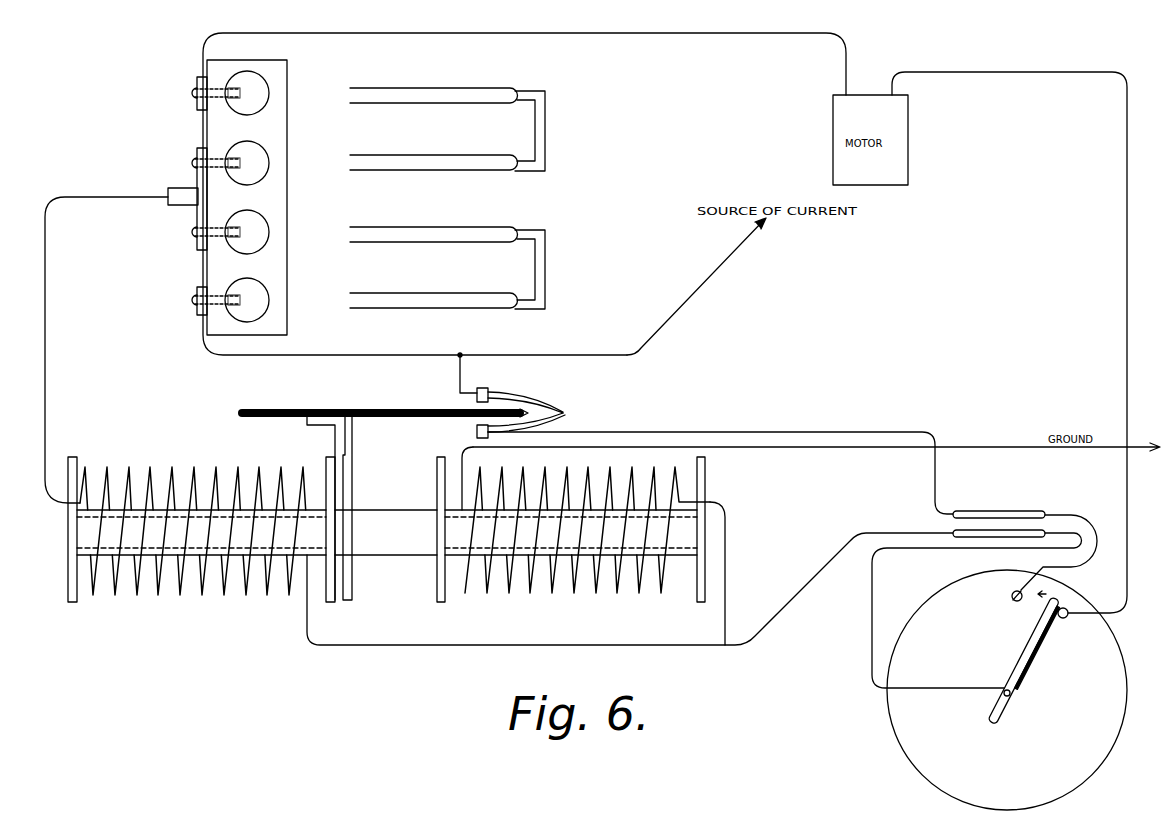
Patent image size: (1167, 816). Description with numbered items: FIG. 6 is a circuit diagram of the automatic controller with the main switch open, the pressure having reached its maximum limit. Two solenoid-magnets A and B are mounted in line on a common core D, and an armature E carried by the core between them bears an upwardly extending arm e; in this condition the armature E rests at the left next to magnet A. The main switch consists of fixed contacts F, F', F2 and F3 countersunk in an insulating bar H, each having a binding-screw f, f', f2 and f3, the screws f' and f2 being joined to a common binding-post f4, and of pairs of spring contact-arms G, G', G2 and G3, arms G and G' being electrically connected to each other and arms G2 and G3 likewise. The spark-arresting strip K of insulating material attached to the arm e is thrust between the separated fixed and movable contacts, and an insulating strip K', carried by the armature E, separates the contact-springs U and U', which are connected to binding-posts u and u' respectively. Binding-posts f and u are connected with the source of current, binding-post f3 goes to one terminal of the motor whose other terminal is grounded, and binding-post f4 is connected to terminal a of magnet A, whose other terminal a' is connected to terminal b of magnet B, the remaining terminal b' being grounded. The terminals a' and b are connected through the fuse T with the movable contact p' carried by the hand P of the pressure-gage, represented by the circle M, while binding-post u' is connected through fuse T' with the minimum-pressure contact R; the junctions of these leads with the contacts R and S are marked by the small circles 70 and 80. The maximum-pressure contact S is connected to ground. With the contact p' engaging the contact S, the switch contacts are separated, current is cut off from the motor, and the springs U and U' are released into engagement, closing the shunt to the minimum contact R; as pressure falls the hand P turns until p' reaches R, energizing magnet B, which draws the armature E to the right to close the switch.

The insulating bar H is at (280, 213).
The fixed contact F is at (233, 291).
The fixed contact F' is at (233, 224).
The fixed contact F2 is at (247, 160).
The fixed contact F3 is at (247, 89).
The binding-screw f is at (178, 304).
The binding-screw f' is at (178, 237).
The binding-screw f2 is at (190, 163).
The binding-screw f3 is at (190, 93).
The common binding-post f4 is at (175, 204).
The spring contact-arm G is at (434, 289).
The spring contact-arm G' is at (434, 222).
The spring contact-arm G2 is at (440, 154).
The spring contact-arm G3 is at (440, 86).
The spark-arresting strip K is at (381, 399).
The insulating-strip K' is at (474, 402).
The binding-post u is at (487, 384).
The binding-post u' is at (469, 434).
The contact-spring U is at (525, 394).
The contact-spring U' is at (549, 417).
The arm e is at (331, 428).
The armature E is at (352, 481).
The terminal a is at (106, 350).
The terminal a' is at (501, 600).
The solenoid-magnet A is at (201, 520).
The core D is at (405, 512).
The solenoid-magnet B is at (573, 524).
The terminal b is at (819, 573).
The terminal b' is at (472, 478).
The fuse T is at (977, 609).
The fuse T' is at (1025, 538).
The rotating disk M is at (886, 707).
The contact post 70 is at (1008, 594).
The contact post 80 is at (1071, 619).
The minimum-pressure contact R is at (1012, 600).
The hand P is at (1018, 650).
The maximum-pressure contact S is at (1062, 619).
The movable contact p' is at (1034, 606).